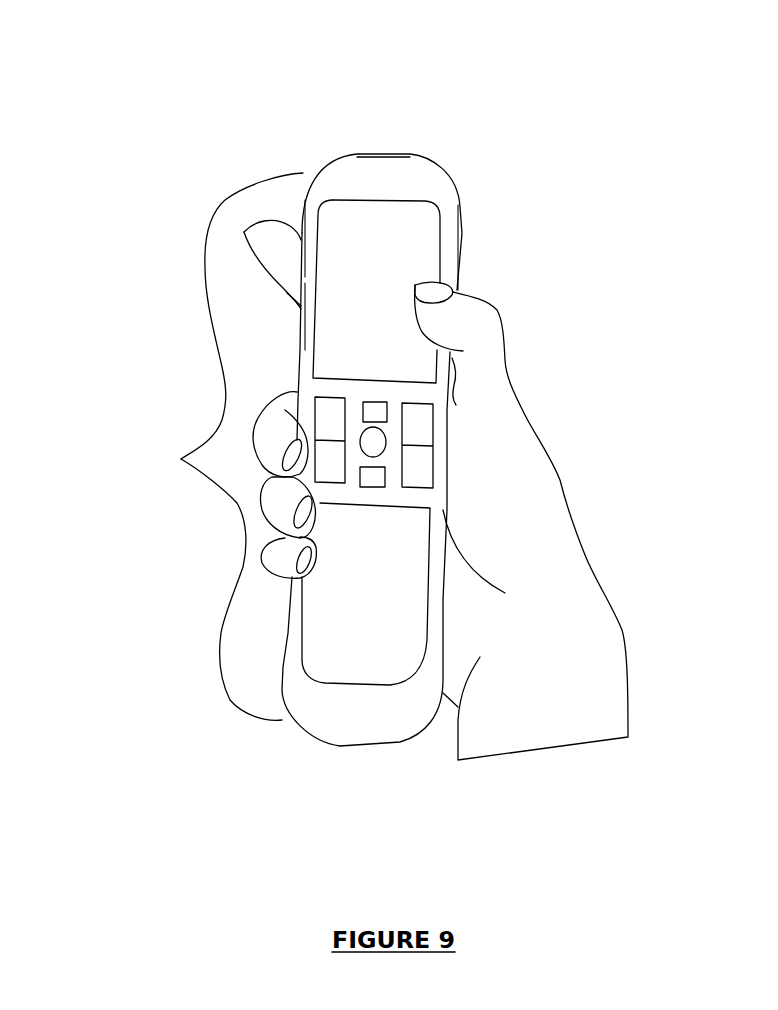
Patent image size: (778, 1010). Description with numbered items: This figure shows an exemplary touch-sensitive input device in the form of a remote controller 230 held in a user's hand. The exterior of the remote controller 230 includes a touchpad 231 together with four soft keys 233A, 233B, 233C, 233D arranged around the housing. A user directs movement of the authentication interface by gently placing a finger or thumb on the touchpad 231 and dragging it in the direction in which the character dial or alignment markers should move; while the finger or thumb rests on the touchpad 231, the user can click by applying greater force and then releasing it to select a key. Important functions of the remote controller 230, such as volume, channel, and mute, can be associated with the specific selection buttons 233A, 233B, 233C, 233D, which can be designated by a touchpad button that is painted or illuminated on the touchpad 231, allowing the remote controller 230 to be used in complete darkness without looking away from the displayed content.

The remote controller 230 is at (382, 466).
The touchpad 231 is at (405, 257).
The soft key 233A is at (462, 228).
The soft key 233B is at (386, 152).
The soft key 233C is at (300, 210).
The soft key 233D is at (299, 306).